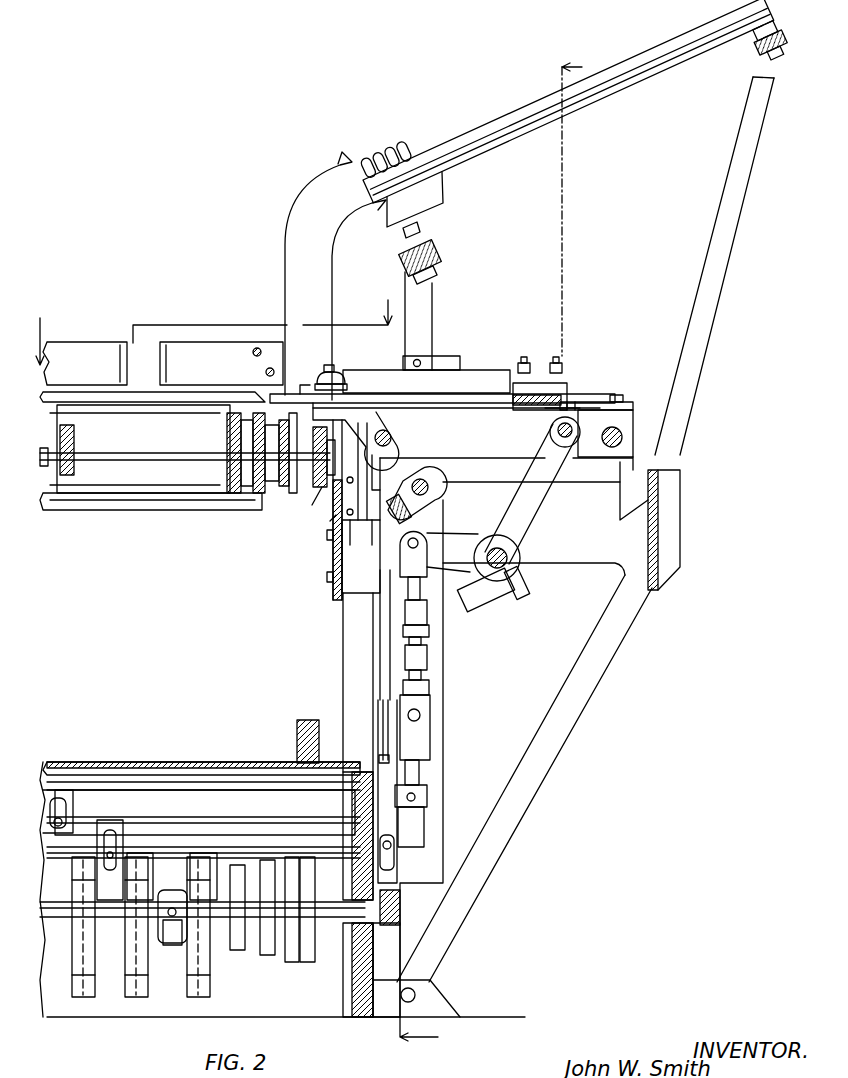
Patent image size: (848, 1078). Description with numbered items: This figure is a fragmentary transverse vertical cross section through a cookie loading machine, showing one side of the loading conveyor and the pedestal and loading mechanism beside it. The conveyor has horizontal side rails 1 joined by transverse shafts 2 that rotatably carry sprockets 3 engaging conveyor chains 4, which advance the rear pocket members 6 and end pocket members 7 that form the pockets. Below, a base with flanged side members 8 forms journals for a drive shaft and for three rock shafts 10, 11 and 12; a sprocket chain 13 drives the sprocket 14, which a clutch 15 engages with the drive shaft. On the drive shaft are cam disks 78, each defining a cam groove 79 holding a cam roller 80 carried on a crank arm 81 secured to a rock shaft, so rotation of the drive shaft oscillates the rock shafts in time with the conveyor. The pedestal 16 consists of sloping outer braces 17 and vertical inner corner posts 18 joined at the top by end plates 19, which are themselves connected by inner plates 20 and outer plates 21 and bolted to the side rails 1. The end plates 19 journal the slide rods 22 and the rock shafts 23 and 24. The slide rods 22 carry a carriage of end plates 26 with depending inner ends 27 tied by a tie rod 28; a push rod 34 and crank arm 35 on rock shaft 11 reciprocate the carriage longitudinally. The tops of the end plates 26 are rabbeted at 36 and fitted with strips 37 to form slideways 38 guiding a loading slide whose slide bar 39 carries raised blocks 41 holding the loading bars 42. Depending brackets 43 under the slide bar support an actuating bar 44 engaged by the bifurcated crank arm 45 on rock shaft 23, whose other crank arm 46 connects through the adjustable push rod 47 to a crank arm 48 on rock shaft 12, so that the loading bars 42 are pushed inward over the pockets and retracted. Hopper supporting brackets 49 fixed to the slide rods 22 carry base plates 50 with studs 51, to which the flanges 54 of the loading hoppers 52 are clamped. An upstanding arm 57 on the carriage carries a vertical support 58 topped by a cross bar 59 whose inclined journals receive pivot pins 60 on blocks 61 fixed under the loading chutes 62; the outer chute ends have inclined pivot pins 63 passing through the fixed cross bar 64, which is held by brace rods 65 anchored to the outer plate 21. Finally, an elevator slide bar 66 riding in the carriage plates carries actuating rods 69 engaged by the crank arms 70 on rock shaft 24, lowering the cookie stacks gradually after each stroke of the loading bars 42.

The side rails 1 is at (498, 548).
The transverse shafts 2 is at (152, 452).
The sprockets 3 is at (208, 478).
The conveyor chains 4 is at (228, 421).
The rear pocket members 6 is at (105, 363).
The end pocket members 7 is at (307, 512).
The flanged side members 8 is at (360, 1020).
The rock shaft 10 is at (240, 930).
The rock shaft 11 is at (236, 900).
The rock shaft 12 is at (118, 812).
The sprocket chain 13 is at (298, 735).
The sprocket 14 is at (318, 975).
The clutch 15 is at (268, 975).
The pedestal 16 is at (615, 782).
The outer braces 17 is at (594, 681).
The inner corner posts 18 is at (340, 636).
The end plates 19 is at (583, 565).
The inner plates 20 is at (328, 572).
The outer plates 21 is at (657, 540).
The slide rods 22 is at (624, 434).
The rock shaft 23 is at (503, 584).
The rock shaft 24 is at (432, 489).
The end plates 26 is at (572, 456).
The depending inner ends 27 is at (389, 472).
The tie rod 28 is at (361, 556).
The push rod 34 is at (378, 607).
The crank arm 35 is at (383, 750).
The rabbeted edges 36 is at (598, 405).
The strips 37 is at (575, 405).
The slideways 38 is at (632, 398).
The slide bar 39 is at (556, 390).
The raised blocks 41 is at (540, 385).
The loading bars 42 is at (440, 378).
The depending brackets 43 is at (520, 410).
The actuating bar 44 is at (548, 428).
The crank arm 45 is at (537, 523).
The crank arm 46 is at (456, 546).
The push rod 47 is at (430, 688).
The crank arm 48 is at (420, 766).
The hopper supporting brackets 49 is at (362, 416).
The base plates 50 is at (328, 384).
The studs 51 is at (339, 367).
The loading hoppers 52 is at (290, 262).
The horizontal flanges 54 is at (300, 392).
The upstanding arm 57 is at (462, 362).
The vertical support 58 is at (433, 303).
The cross bar 59 is at (430, 254).
The pivot pins 60 is at (422, 226).
The blocks 61 is at (432, 190).
The loading chutes 62 is at (527, 105).
The pivot pins 63 is at (784, 60).
The fixed cross bar 64 is at (760, 86).
The brace rods 65 is at (735, 216).
The slide bar 66 is at (333, 520).
The actuating rods 69 is at (394, 518).
The crank arms 70 is at (405, 507).
The cam disks 78 is at (136, 1000).
The cam groove 79 is at (128, 950).
The cam roller 80 is at (195, 860).
The crank arms 81 is at (62, 790).